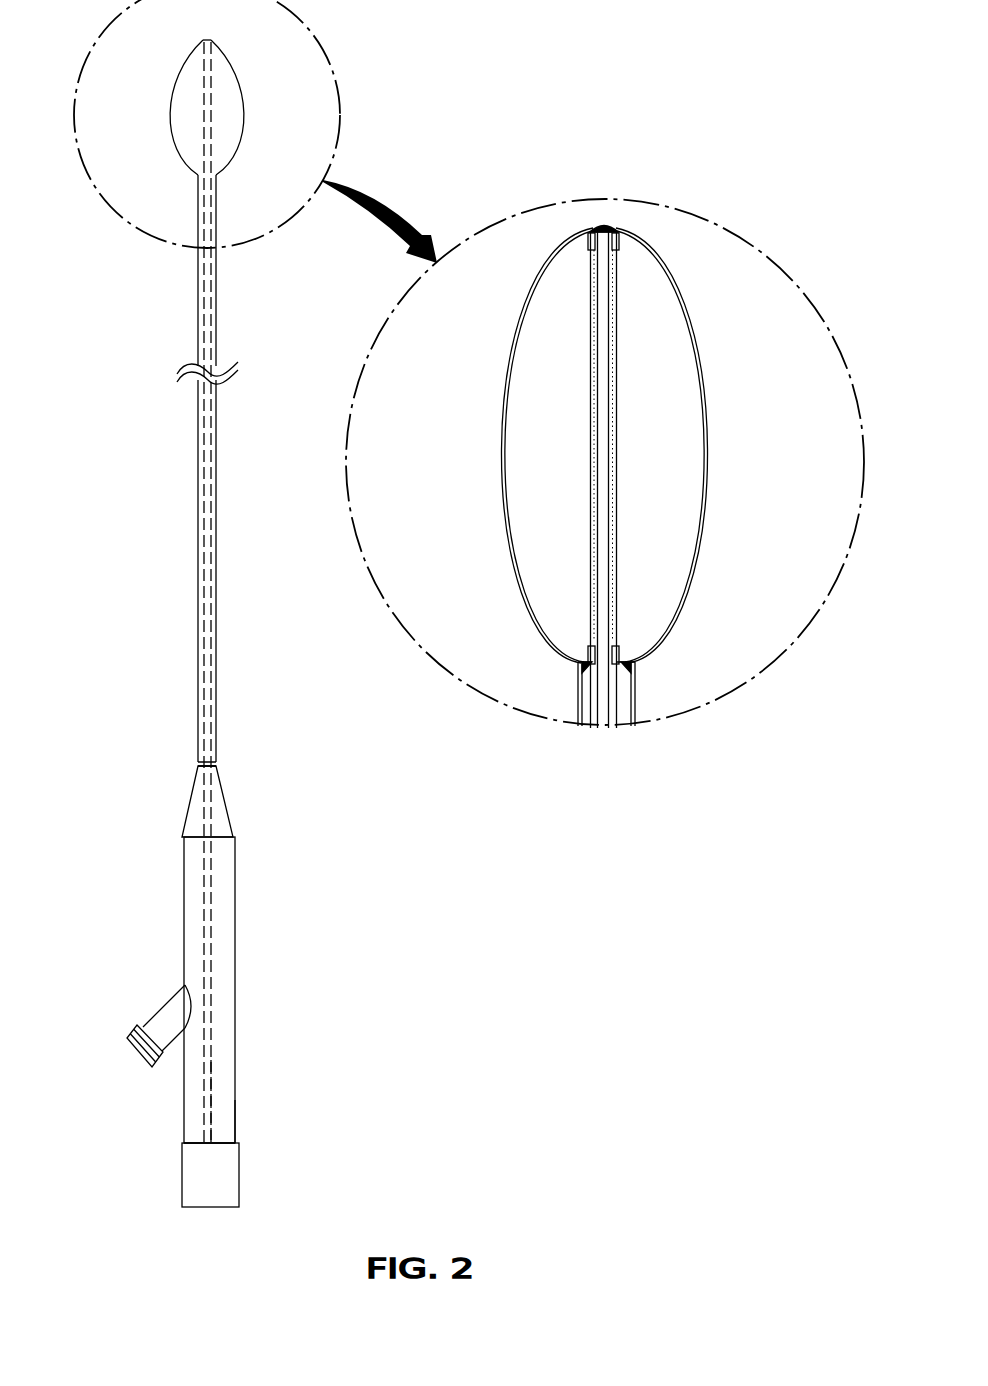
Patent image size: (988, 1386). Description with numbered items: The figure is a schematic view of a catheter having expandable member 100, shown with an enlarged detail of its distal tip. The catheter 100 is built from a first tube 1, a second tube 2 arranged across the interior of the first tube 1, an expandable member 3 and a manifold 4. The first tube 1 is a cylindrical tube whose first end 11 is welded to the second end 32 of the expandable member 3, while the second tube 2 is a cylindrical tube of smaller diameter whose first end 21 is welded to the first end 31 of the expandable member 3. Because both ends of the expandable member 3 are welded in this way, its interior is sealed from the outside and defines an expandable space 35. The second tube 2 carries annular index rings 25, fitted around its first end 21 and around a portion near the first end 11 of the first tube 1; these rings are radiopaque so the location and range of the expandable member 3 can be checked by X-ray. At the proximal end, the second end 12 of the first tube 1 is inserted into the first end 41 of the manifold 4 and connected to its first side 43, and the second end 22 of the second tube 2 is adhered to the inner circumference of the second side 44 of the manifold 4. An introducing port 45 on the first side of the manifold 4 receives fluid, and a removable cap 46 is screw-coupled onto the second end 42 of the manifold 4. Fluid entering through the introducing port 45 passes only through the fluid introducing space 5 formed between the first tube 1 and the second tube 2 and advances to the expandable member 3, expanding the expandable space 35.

The catheter having expandable member 100 is at (58, 17).
The first tube 1 is at (200, 474).
The second tube 2 is at (217, 440).
The expandable member 3 is at (732, 400).
The manifold 4 is at (258, 948).
The fluid introducing space 5 is at (203, 540).
The first end of the first tube 11 is at (641, 660).
The second end of the first tube 12 is at (200, 762).
The first end of the second tube 21 is at (635, 235).
The second end of the second tube 22 is at (213, 1080).
The index ring 25 is at (577, 240).
The first end of the expandable member 31 is at (622, 228).
The second end of the expandable member 32 is at (645, 703).
The expandable space 35 is at (648, 480).
The first end of the manifold 41 is at (214, 768).
The second end of the manifold 42 is at (200, 1142).
The first side of the manifold 43 is at (170, 780).
The second side of the manifold 44 is at (260, 1127).
The introducing port 45 is at (138, 1056).
The removable cap 46 is at (225, 1173).